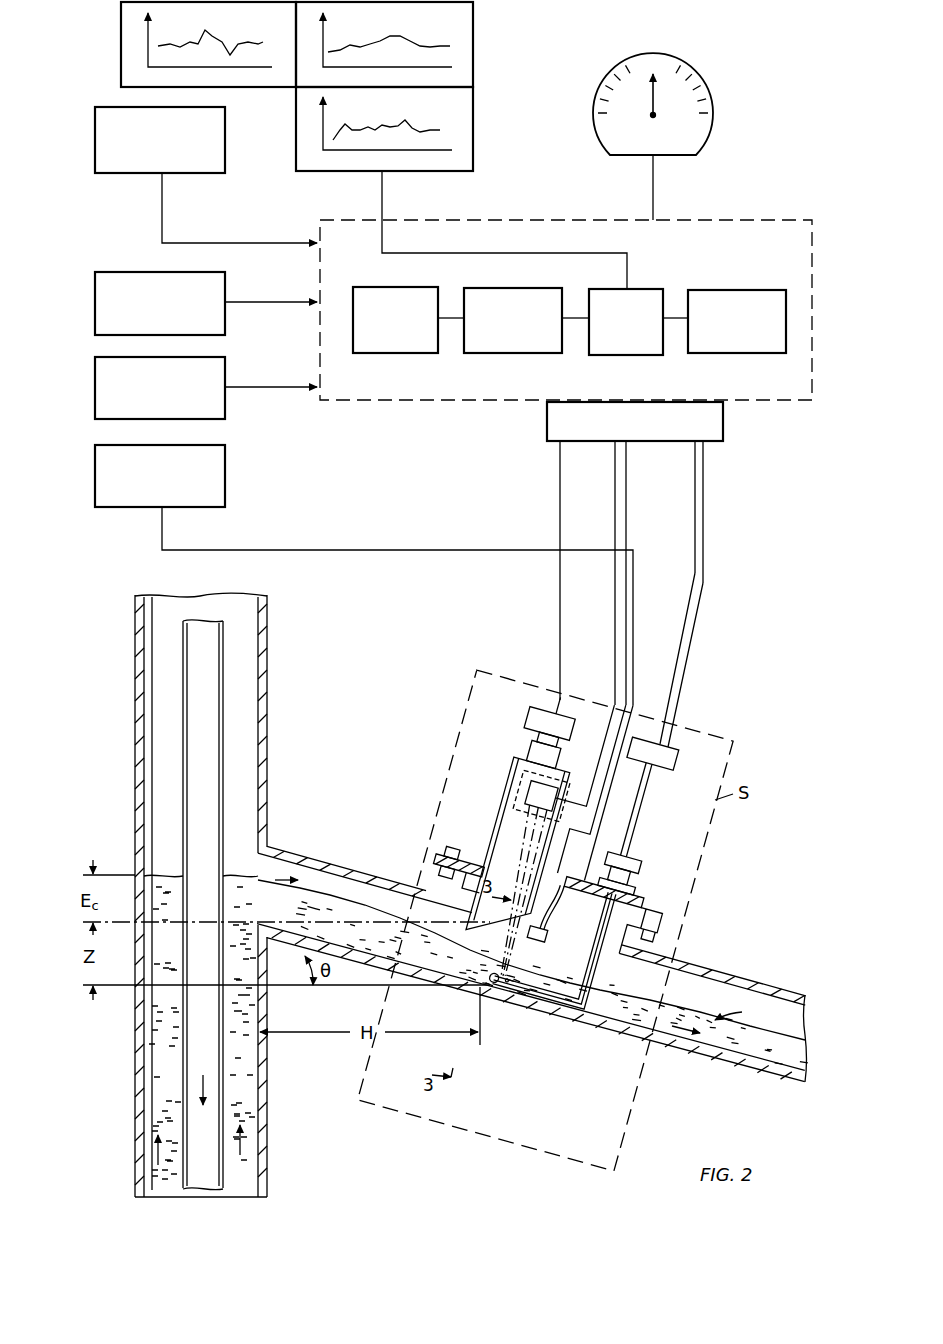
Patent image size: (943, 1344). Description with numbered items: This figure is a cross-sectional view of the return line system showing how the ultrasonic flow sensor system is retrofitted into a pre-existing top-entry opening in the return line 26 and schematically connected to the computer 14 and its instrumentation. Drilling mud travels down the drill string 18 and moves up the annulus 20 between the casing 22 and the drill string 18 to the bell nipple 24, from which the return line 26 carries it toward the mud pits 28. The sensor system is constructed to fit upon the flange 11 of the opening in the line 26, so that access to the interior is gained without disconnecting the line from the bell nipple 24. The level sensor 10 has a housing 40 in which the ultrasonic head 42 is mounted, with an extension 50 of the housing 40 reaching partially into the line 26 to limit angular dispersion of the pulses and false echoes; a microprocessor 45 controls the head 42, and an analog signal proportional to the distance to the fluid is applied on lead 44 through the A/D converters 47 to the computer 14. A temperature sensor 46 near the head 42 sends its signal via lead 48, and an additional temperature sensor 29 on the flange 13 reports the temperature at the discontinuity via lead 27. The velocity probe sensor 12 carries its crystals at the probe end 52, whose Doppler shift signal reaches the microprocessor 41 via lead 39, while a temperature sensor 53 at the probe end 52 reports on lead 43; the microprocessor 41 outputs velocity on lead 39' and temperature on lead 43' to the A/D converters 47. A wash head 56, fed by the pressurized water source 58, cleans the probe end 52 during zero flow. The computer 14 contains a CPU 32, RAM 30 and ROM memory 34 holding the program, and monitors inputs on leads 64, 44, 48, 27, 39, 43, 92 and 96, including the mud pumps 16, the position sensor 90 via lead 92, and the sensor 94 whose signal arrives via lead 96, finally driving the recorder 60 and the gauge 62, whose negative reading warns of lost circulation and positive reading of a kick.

The level sensor 10 is at (489, 796).
The flange 11 is at (665, 925).
The velocity probe sensor 12 is at (646, 878).
The flange 13 is at (578, 885).
The computer 14 is at (394, 401).
The mud pumps 16 is at (95, 162).
The drill string 18 is at (190, 1055).
The annulus 20 is at (232, 1173).
The casing 22 is at (130, 1131).
The bell nipple 24 is at (135, 682).
The return line 26 is at (328, 862).
The lead 27 is at (626, 575).
The mud pits 28 is at (403, 353).
The temperature sensor 29 is at (560, 905).
The RAM 30 is at (511, 353).
The CPU 32 is at (623, 355).
The ROM memory 34 is at (747, 353).
The lead 39 is at (657, 809).
The lead 39' is at (764, 512).
The housing 40 is at (500, 824).
The microprocessor 41 is at (676, 765).
The ultrasonic head 42 is at (512, 770).
The lead 43 is at (586, 874).
The lead 43' is at (705, 660).
The lead 44 is at (560, 490).
The microprocessor 45 is at (530, 718).
The temperature sensor 46 is at (551, 796).
The A/D converters 47 is at (723, 428).
The lead 48 is at (615, 579).
The extension 50 is at (468, 925).
The probe 52 is at (500, 986).
The temperature sensor 53 is at (515, 982).
The wash head 56 is at (547, 938).
The pressurized water source 58 is at (95, 487).
The recorder 60 is at (473, 164).
The gauge 62 is at (712, 146).
The lead 64 is at (251, 236).
The sensor 90 is at (95, 402).
The lead 92 is at (282, 390).
The density sensor 94 is at (95, 316).
The lead 96 is at (289, 297).